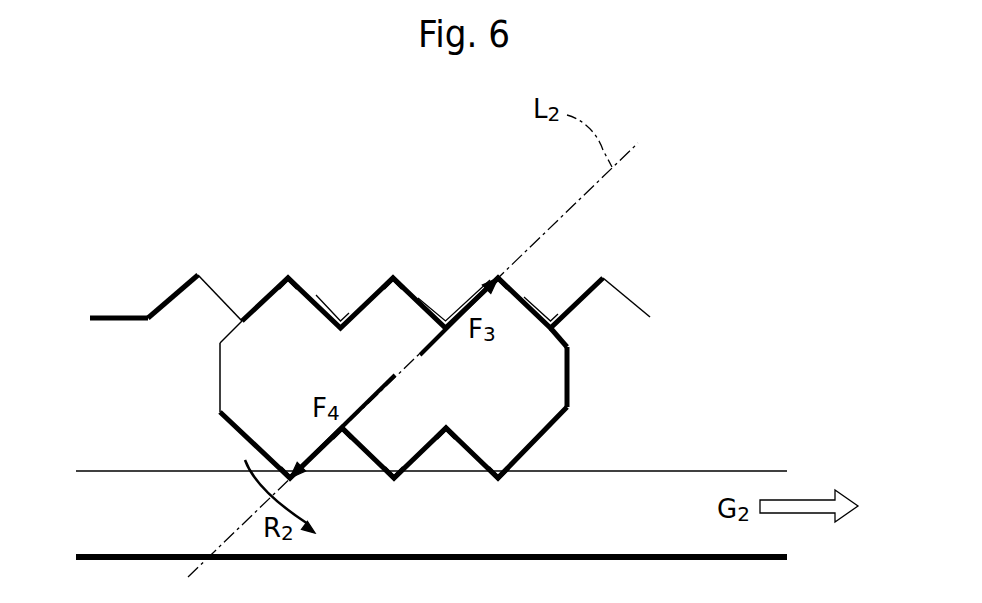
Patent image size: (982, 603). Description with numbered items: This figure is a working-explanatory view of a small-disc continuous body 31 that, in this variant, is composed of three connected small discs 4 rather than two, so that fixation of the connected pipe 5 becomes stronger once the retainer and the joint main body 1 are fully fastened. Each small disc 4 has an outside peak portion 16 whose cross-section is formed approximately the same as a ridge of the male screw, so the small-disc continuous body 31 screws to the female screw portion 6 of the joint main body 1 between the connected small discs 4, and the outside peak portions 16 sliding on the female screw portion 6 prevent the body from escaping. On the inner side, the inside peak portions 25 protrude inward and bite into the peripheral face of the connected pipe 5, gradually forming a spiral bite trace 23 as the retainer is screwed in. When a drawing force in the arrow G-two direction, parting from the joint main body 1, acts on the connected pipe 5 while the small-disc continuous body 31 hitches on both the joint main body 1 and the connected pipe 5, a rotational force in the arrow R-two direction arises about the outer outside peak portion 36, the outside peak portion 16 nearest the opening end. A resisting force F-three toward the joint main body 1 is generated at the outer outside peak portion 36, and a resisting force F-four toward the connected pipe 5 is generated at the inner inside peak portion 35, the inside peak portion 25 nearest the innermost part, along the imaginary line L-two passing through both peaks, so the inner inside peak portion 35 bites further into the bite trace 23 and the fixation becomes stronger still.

The joint main body 1 is at (114, 321).
The small disc 4 is at (219, 388).
The connected pipe 5 is at (722, 466).
The female screw portion 6 is at (217, 296).
The outside peak portion 16 is at (401, 245).
The outer outside peak portion 36 is at (498, 283).
The bite trace 23 is at (282, 462).
The inside peak portion 25 is at (416, 511).
The inner inside peak portion 35 is at (290, 473).
The small-disc continuous body 31 is at (569, 380).